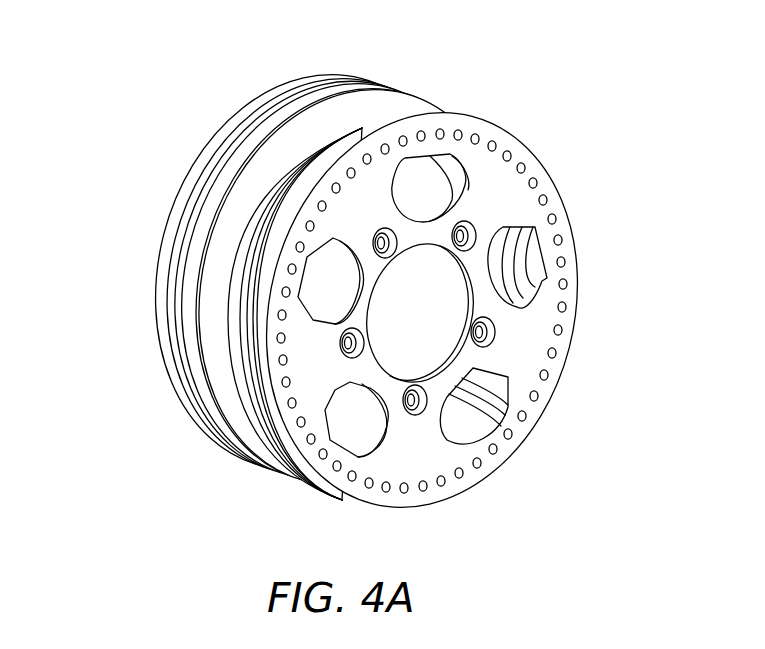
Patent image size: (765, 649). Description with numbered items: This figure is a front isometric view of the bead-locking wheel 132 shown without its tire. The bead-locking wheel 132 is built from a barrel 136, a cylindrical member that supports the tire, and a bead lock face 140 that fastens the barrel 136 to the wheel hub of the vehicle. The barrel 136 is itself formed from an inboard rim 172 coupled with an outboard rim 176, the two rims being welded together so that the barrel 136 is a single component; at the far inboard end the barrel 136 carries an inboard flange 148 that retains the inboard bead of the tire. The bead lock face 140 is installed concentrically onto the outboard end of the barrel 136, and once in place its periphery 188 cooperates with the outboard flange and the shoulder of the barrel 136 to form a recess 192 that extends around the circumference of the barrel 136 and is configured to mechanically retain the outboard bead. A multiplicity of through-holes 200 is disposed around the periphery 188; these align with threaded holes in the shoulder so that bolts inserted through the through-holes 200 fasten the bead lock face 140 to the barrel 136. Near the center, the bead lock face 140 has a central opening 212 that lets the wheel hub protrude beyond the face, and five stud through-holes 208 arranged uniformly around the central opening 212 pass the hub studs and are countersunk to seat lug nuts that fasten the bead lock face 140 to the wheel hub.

The bead-locking wheel 132 is at (522, 84).
The barrel 136 is at (142, 238).
The bead lock face 140 is at (600, 280).
The inboard flange 148 is at (160, 350).
The inboard rim 172 is at (221, 437).
The outboard rim 176 is at (280, 157).
The periphery 188 is at (553, 392).
The recess 192 is at (283, 230).
The through-holes 200 is at (473, 136).
The stud through-holes 208 is at (470, 228).
The central opening 212 is at (377, 277).